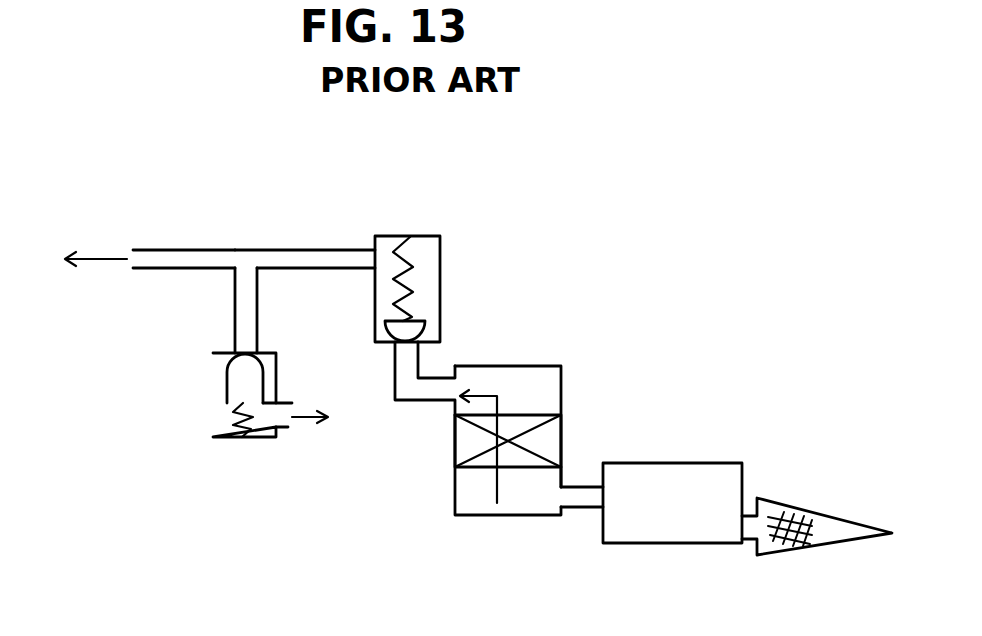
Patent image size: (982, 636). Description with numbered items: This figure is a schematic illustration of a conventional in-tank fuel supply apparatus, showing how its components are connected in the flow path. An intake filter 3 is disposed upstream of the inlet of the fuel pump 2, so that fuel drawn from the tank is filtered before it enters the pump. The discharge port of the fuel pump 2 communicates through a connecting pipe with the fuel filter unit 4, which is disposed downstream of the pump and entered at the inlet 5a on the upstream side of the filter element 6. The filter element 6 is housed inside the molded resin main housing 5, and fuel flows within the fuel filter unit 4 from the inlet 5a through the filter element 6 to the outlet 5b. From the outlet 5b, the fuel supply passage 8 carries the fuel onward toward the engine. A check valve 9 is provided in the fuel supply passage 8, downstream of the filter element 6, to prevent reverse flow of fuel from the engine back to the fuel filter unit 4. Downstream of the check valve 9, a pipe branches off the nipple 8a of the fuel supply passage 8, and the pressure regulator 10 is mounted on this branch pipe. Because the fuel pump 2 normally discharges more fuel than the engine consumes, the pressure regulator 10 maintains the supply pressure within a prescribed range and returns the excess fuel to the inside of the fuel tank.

The fuel pump 2 is at (688, 463).
The intake filter 3 is at (828, 518).
The fuel filter unit 4 is at (452, 505).
The main housing 5 is at (545, 367).
The inlet 5a is at (578, 506).
The outlet 5b is at (434, 390).
The filter element 6 is at (475, 443).
The fuel supply passage 8 is at (310, 261).
The nipple 8a is at (174, 249).
The check valve 9 is at (420, 313).
The pressure regulator 10 is at (227, 397).